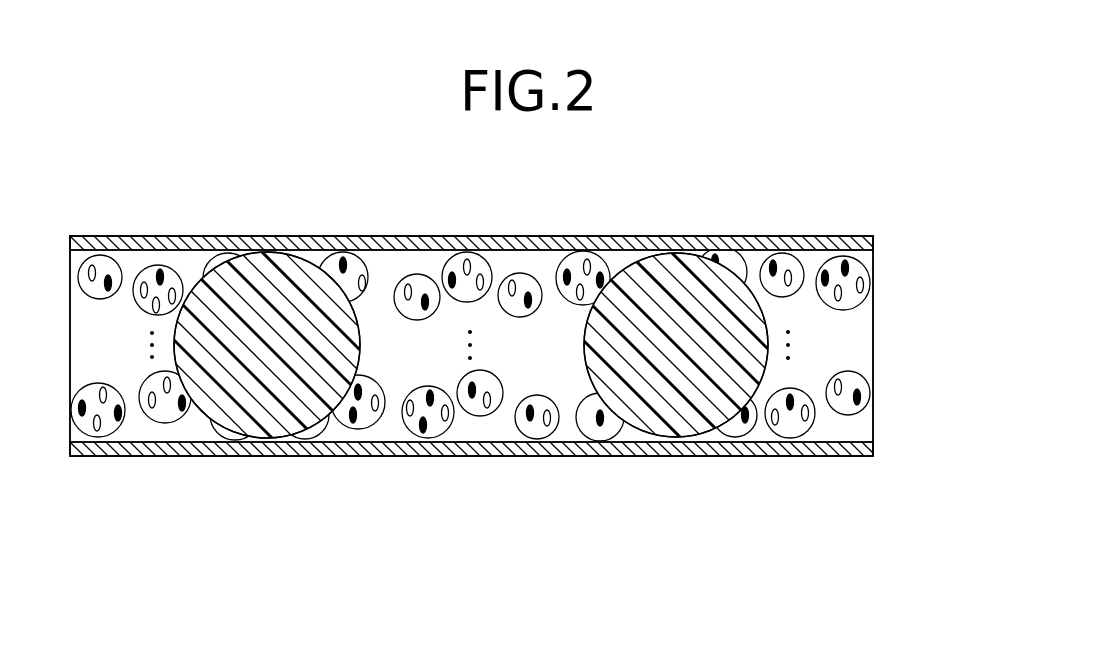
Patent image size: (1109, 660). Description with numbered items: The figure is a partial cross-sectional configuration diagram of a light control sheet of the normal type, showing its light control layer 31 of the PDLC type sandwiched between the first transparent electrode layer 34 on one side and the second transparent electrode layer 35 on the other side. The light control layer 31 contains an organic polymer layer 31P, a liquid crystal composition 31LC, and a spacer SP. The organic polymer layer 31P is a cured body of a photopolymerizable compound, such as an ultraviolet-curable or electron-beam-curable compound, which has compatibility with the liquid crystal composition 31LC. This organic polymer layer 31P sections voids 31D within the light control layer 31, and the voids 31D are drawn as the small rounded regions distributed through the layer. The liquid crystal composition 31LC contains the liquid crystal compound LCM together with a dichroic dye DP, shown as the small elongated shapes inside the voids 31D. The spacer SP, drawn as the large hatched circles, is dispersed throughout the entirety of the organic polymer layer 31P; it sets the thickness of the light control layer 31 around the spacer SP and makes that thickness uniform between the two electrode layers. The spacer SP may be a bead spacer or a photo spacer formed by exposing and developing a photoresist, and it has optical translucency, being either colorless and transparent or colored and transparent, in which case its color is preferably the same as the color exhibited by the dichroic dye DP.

The light control layer 31 is at (933, 250).
The organic polymer layer 31P is at (874, 336).
The first transparent electrode layer 34 is at (874, 448).
The second transparent electrode layer 35 is at (874, 243).
The spacer SP is at (677, 260).
The liquid crystal compound LCM is at (833, 378).
The liquid crystal composition 31LC is at (780, 432).
The voids 31D is at (800, 432).
The dichroic dye DP is at (772, 260).